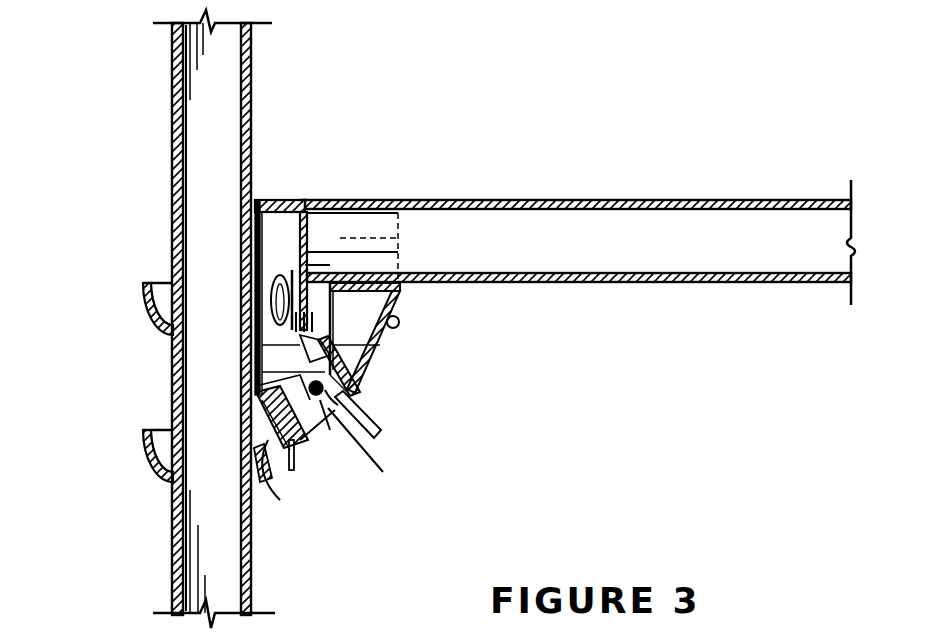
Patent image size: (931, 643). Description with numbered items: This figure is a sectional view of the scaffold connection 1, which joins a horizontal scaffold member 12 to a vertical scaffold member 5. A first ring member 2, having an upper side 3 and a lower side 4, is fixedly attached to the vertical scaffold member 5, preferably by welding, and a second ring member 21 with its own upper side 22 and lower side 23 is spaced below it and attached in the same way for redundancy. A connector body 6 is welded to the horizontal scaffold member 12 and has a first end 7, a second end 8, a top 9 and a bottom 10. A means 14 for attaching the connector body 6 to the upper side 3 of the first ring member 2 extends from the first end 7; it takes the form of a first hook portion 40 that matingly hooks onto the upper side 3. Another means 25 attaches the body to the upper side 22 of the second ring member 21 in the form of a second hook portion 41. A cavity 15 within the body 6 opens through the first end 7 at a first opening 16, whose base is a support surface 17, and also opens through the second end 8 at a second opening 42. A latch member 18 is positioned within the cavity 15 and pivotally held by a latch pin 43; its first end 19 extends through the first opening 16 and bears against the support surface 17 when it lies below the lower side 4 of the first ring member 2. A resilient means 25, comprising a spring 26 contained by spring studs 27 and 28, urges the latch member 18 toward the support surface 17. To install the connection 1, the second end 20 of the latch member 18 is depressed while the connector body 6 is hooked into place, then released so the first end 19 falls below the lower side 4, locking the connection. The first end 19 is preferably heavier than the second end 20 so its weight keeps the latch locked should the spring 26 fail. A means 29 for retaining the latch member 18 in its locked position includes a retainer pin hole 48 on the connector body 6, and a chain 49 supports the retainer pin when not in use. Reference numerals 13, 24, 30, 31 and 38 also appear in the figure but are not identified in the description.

The scaffold connection 1 is at (448, 423).
The first ring member 2 is at (130, 287).
The upper side 3 is at (158, 262).
The lower side 4 is at (145, 318).
The vertical scaffold member 5 is at (252, 560).
The connector body 6 is at (403, 295).
The first end 7 is at (268, 378).
The second end 8 is at (382, 375).
The top 9 is at (305, 195).
The bottom 10 is at (317, 444).
The horizontal scaffold member 12 is at (711, 283).
The horizontal pipe top wall 13 is at (615, 200).
The means for attachment 14 is at (308, 231).
The cavity 15 is at (332, 430).
The first opening 16 is at (272, 418).
The support surface 17 is at (268, 445).
The latch member 18 is at (285, 345).
The first end 19 is at (285, 330).
The second end 20 is at (378, 436).
The second ring member 21 is at (130, 450).
The upper side 22 is at (158, 428).
The lower side 23 is at (150, 478).
The pipe inner line 24 is at (243, 462).
The resilient means 25 is at (322, 272).
The spring 26 is at (356, 334).
The spring stud 27 is at (265, 300).
The spring stud 28 is at (333, 300).
The means for retaining 29 is at (290, 395).
The pin 30 is at (296, 470).
The bracket side wall 31 is at (298, 200).
The bracket top wall 38 is at (268, 200).
The first hook portion 40 is at (277, 268).
The second hook portion 41 is at (262, 472).
The second opening 42 is at (356, 448).
The latch pin 43 is at (325, 390).
The retainer pin hole 48 is at (300, 351).
The chain 49 is at (400, 325).